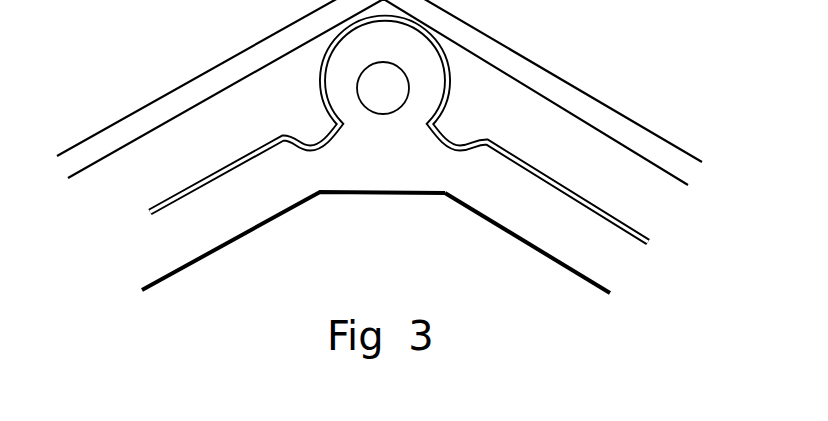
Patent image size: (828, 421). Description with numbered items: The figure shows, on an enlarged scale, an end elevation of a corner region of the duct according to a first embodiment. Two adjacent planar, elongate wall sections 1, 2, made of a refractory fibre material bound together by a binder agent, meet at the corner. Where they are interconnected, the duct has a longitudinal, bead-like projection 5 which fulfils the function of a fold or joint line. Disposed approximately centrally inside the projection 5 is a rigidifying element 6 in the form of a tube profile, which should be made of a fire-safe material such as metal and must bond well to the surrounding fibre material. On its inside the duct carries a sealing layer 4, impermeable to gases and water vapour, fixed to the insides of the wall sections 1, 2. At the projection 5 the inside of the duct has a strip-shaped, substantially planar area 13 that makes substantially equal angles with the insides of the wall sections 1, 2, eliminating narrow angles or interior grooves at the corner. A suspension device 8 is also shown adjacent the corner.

The longitudinal wall section 1 is at (189, 240).
The longitudinal wall section 2 is at (572, 242).
The sealing layer 4 is at (399, 146).
The projection 5 is at (338, 78).
The rigidifying element 6 is at (409, 90).
The suspension device 8 is at (597, 108).
The planar area 13 is at (310, 263).